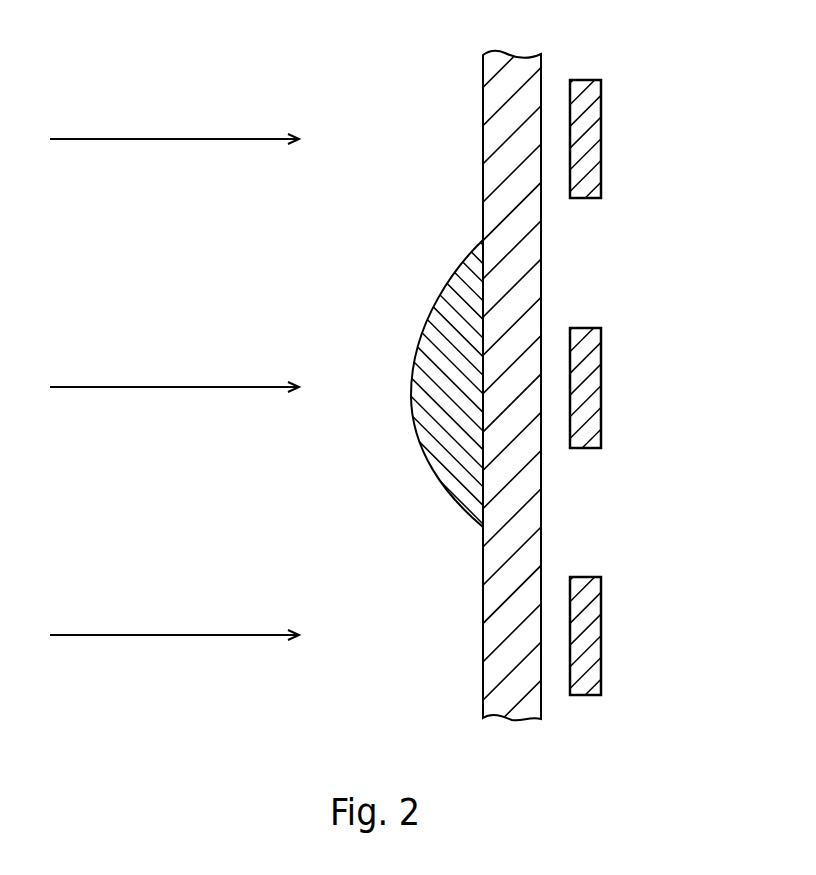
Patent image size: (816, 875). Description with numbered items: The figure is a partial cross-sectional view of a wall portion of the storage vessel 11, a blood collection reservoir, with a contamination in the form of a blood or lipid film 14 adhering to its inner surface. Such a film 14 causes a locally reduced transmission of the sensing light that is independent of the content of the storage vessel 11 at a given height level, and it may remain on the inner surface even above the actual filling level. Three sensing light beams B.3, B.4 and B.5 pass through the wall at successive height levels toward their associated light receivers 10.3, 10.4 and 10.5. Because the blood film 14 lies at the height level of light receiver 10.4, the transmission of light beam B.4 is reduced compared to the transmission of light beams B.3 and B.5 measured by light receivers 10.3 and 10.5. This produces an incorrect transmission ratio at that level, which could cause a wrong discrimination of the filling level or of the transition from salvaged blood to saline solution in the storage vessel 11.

The storage vessel 11 is at (530, 66).
The blood or lipid film 14 is at (420, 420).
The light receiver 10.5 is at (592, 106).
The light receiver 10.4 is at (593, 375).
The light receiver 10.3 is at (592, 639).
The sensing light beam B.5 is at (174, 123).
The sensing light beam B.4 is at (174, 372).
The sensing light beam B.3 is at (174, 619).